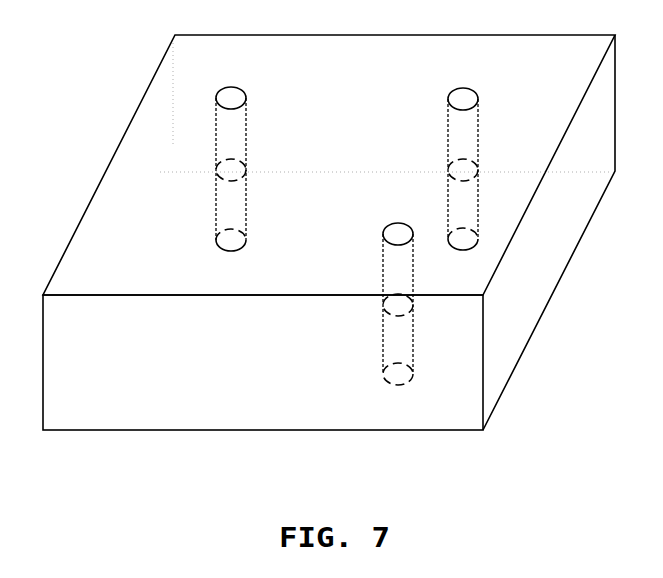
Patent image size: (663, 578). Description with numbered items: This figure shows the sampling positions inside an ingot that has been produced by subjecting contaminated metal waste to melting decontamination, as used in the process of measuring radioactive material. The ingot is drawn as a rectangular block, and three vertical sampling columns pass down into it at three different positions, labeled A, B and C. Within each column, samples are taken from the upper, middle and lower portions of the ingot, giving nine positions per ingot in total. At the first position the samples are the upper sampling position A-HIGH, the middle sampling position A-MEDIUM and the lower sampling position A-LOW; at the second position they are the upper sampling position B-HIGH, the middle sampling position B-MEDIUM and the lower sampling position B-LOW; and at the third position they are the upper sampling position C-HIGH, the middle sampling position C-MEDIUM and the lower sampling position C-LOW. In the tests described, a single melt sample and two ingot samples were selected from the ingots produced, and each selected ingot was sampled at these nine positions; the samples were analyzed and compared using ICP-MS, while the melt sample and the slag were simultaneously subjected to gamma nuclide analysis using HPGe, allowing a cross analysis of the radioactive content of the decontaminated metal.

The sampling position A-HIGH is at (353, 297).
The sampling position A-MEDIUM is at (353, 304).
The sampling position A-LOW is at (353, 372).
The sampling position B-HIGH is at (495, 162).
The sampling position B-MEDIUM is at (507, 165).
The sampling position B-LOW is at (494, 235).
The sampling position C-HIGH is at (185, 163).
The sampling position C-MEDIUM is at (185, 165).
The sampling position C-LOW is at (185, 236).